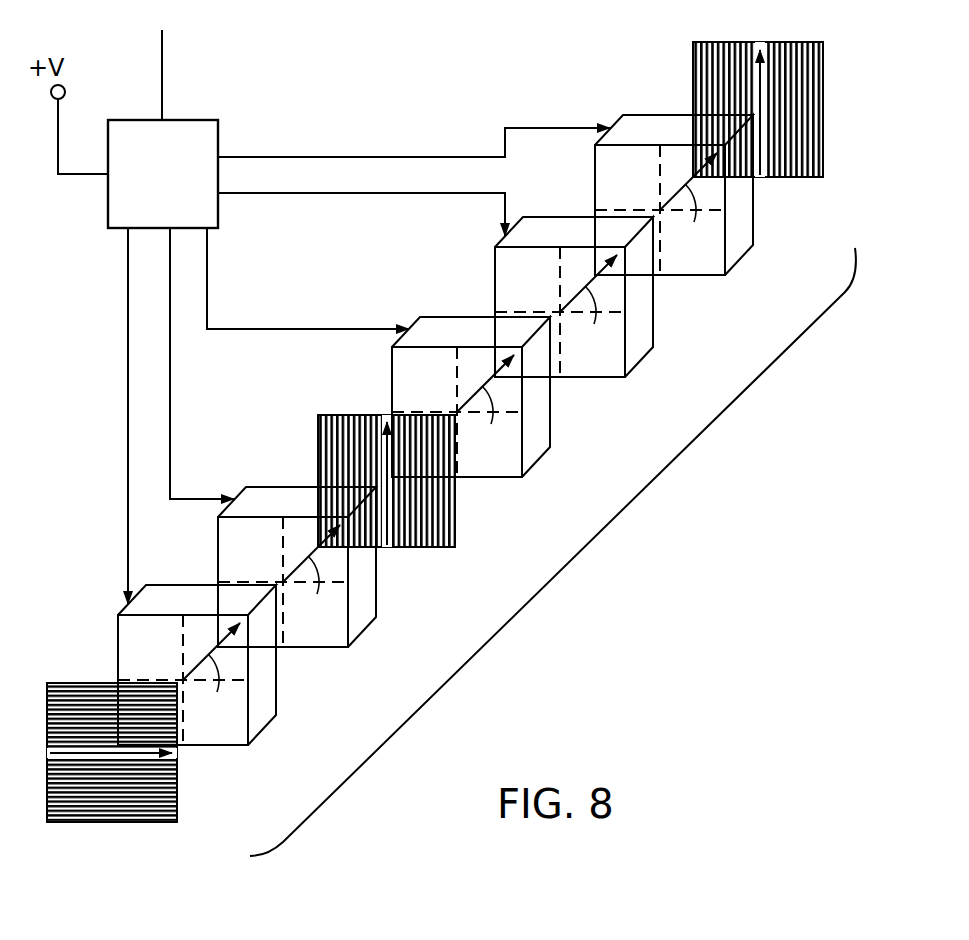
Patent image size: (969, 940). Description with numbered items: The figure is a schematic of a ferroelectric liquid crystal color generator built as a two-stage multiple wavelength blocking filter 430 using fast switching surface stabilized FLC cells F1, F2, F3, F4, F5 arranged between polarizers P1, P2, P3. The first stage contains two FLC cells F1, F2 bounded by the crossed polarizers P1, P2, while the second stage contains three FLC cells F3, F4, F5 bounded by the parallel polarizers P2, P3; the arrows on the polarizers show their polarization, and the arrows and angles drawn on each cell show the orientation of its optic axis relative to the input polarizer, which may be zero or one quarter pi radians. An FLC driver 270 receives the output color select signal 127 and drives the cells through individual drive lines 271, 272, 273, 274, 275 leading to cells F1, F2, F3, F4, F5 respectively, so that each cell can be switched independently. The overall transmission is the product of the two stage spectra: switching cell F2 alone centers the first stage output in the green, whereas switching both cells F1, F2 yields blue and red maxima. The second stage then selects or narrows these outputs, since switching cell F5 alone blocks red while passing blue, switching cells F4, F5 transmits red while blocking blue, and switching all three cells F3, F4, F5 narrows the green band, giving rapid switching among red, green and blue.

The output color select signal 127 is at (162, 62).
The FLC driver 270 is at (144, 210).
The drive line to F1 271 is at (127, 334).
The drive line to F2 272 is at (172, 415).
The drive line to F3 273 is at (232, 329).
The drive line to F4 274 is at (290, 194).
The drive line to F5 275 is at (288, 158).
The tunable filter stack 430 is at (556, 576).
The polarizer P1 is at (177, 803).
The polarizer P2 is at (455, 530).
The polarizer P3 is at (800, 178).
The FLC cell F1 is at (278, 705).
The FLC cell F2 is at (380, 603).
The FLC cell F3 is at (553, 453).
The FLC cell F4 is at (655, 352).
The FLC cell F5 is at (740, 260).